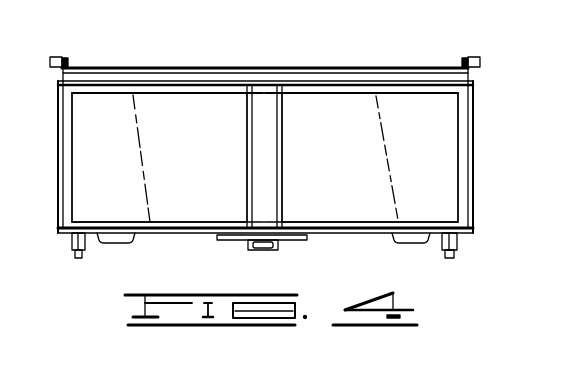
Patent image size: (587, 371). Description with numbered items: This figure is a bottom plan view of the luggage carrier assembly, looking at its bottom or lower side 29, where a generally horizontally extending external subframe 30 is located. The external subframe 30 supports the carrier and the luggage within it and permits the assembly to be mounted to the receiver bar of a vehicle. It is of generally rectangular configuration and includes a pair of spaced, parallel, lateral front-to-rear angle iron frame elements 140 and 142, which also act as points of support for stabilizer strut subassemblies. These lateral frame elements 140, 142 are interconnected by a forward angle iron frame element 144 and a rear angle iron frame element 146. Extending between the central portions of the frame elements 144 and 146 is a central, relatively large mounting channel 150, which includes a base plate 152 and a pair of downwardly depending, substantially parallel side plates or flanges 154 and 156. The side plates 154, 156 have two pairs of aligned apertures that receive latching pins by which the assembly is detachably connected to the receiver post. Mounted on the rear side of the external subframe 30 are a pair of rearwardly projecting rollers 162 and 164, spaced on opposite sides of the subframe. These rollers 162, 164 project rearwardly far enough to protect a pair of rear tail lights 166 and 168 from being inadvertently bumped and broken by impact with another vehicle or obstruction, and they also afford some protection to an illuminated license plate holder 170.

The bottom or lower side 29 is at (184, 110).
The external subframe 30 is at (423, 93).
The lateral front-to-rear angle iron frame element 140 is at (70, 163).
The lateral front-to-rear angle iron frame element 142 is at (464, 193).
The forward angle iron frame element 144 is at (305, 94).
The rear angle iron frame element 146 is at (173, 233).
The mounting channel 150 is at (265, 160).
The base plate 152 is at (264, 100).
The side plate 154 is at (246, 107).
The side plate 156 is at (283, 187).
The roller 162 is at (78, 256).
The roller 164 is at (452, 256).
The rear tail light 166 is at (110, 243).
The rear tail light 168 is at (412, 243).
The illuminated license plate holder 170 is at (290, 243).